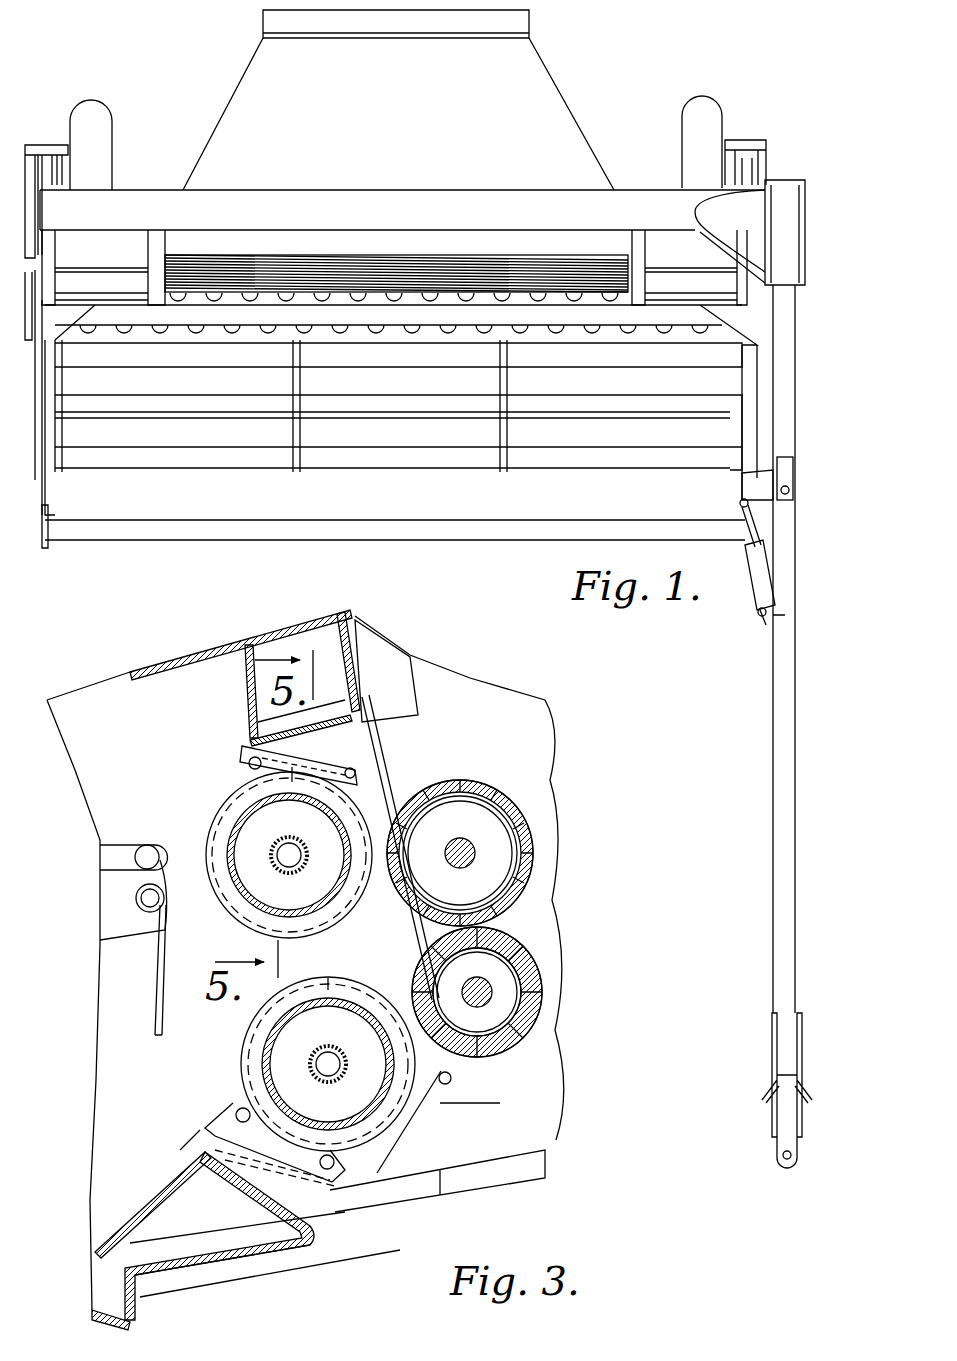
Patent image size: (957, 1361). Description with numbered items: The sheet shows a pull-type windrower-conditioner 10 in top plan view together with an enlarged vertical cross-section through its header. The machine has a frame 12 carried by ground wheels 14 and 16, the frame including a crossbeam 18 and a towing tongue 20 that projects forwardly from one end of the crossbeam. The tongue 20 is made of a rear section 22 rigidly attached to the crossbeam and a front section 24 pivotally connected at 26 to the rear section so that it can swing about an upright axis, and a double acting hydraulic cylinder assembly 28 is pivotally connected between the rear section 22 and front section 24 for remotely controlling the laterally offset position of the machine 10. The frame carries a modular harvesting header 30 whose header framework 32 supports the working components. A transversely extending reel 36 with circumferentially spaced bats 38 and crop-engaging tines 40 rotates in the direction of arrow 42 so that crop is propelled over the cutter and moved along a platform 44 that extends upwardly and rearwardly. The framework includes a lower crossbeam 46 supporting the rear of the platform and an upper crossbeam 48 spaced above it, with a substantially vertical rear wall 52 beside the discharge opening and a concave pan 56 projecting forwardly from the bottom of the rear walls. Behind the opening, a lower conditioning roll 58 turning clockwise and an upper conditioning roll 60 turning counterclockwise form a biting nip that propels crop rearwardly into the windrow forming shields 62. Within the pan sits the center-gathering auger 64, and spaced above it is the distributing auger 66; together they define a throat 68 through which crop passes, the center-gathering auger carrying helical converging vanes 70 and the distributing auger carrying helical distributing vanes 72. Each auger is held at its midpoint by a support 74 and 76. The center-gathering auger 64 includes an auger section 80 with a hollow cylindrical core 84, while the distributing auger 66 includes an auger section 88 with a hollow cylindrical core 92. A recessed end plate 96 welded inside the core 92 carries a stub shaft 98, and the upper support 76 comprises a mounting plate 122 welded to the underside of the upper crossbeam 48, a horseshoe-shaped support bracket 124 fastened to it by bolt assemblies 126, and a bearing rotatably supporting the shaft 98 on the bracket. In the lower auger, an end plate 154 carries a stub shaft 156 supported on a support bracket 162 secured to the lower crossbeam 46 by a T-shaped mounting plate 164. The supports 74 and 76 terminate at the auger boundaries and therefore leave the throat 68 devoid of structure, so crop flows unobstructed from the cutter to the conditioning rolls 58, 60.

In FIG. 1, the windrower-conditioner 10 is at (750, 130).
In FIG. 1, the frame 12 is at (617, 180).
In FIG. 1, the ground wheel 14 is at (90, 108).
In FIG. 1, the ground wheel 16 is at (703, 104).
In FIG. 1, the crossbeam 18 is at (126, 196).
In FIG. 1, the towing tongue 20 is at (770, 686).
In FIG. 1, the rear section 22 is at (796, 402).
In FIG. 1, the front section 24 is at (780, 856).
In FIG. 1, the pivotal connection 26 is at (795, 488).
In FIG. 1, the hydraulic cylinder assembly 28 is at (757, 584).
In FIG. 1, the harvesting header 30 is at (752, 328).
In FIG. 1, the header framework 32 is at (138, 305).
In FIG. 3, the header framework 32 is at (362, 640).
In FIG. 1, the reel 36 is at (390, 466).
In FIG. 3, the reel 36 is at (112, 950).
In FIG. 3, the bats 38 is at (112, 858).
In FIG. 3, the tines 40 is at (152, 1030).
In FIG. 3, the arrow 42 is at (92, 748).
In FIG. 3, the platform 44 is at (150, 1196).
In FIG. 3, the lower crossbeam 46 is at (230, 1262).
In FIG. 3, the upper crossbeam 48 is at (245, 692).
In FIG. 3, the rear wall 52 is at (382, 746).
In FIG. 3, the pan 56 is at (436, 1106).
In FIG. 1, the lower conditioning roll 58 is at (358, 256).
In FIG. 3, the lower conditioning roll 58 is at (505, 1046).
In FIG. 1, the upper conditioning roll 60 is at (440, 268).
In FIG. 3, the upper conditioning roll 60 is at (462, 781).
In FIG. 1, the windrow forming shields 62 is at (530, 58).
In FIG. 3, the center-gathering auger 64 is at (400, 1122).
In FIG. 1, the distributing auger 66 is at (560, 336).
In FIG. 3, the distributing auger 66 is at (282, 852).
In FIG. 3, the throat 68 is at (293, 1051).
In FIG. 3, the converging vanes 70 is at (256, 1056).
In FIG. 3, the distributing vanes 72 is at (216, 826).
In FIG. 3, the lower support 74 is at (342, 1200).
In FIG. 3, the upper support 76 is at (368, 720).
In FIG. 3, the auger section 80 is at (330, 978).
In FIG. 3, the cylindrical core 84 is at (452, 1082).
In FIG. 3, the auger section 88 is at (365, 902).
In FIG. 3, the cylindrical core 92 is at (236, 890).
In FIG. 3, the end plate 96 is at (310, 905).
In FIG. 3, the stub shaft 98 is at (292, 858).
In FIG. 3, the mounting plate 122 is at (243, 753).
In FIG. 3, the support bracket 124 is at (238, 930).
In FIG. 3, the bolt assemblies 126 is at (356, 774).
In FIG. 3, the end plate 154 is at (262, 1070).
In FIG. 3, the stub shaft 156 is at (322, 1066).
In FIG. 3, the support bracket 162 is at (350, 986).
In FIG. 3, the mounting plate 164 is at (225, 1126).